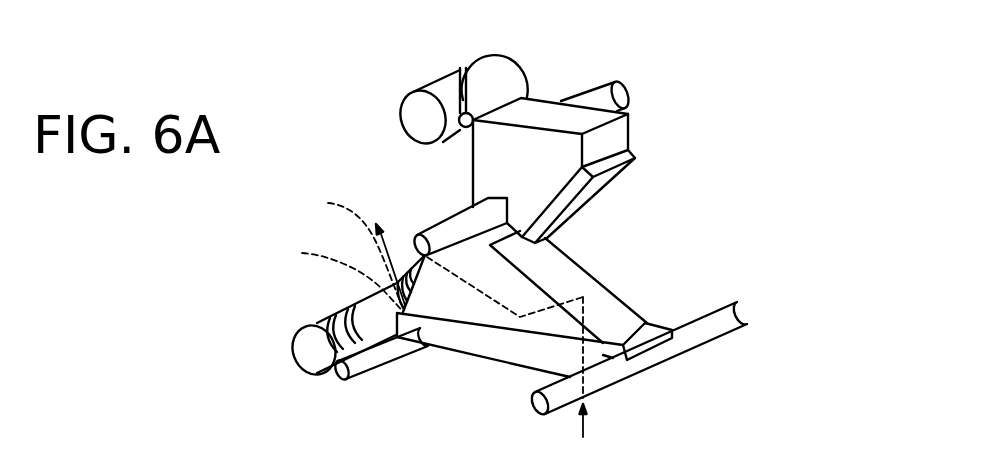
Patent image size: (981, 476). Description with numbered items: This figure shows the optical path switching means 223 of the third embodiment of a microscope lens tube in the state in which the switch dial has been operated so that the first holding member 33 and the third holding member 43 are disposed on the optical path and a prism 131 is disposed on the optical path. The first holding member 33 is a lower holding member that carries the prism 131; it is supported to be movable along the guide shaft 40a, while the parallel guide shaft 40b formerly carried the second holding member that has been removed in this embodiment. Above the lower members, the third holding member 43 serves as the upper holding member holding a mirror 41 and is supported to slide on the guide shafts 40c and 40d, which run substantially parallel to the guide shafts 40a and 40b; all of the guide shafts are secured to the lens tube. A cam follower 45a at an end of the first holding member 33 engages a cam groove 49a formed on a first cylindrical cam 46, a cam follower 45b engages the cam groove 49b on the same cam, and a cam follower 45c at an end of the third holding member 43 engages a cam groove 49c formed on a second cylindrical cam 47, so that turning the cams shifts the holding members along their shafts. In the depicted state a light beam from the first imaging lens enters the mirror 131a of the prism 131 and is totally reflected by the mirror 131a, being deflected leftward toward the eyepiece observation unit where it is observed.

The first holding member 33 is at (452, 343).
The guide shaft 40a is at (342, 380).
The guide shaft 40b is at (538, 404).
The guide shaft 40c is at (603, 90).
The guide shaft 40d is at (419, 241).
The mirror 41 is at (634, 156).
The third holding member 43 is at (607, 117).
The cam follower 45a is at (322, 276).
The cam follower 45b is at (343, 248).
The cam follower 45c is at (478, 110).
The first cylindrical cam 46 is at (303, 350).
The second cylindrical cam 47 is at (410, 108).
The cam groove 49a is at (365, 303).
The cam groove 49b is at (396, 283).
The cam groove 49c is at (462, 112).
The prism 131 is at (430, 293).
The mirror 131a is at (573, 316).
The optical path switching means 223 is at (673, 263).